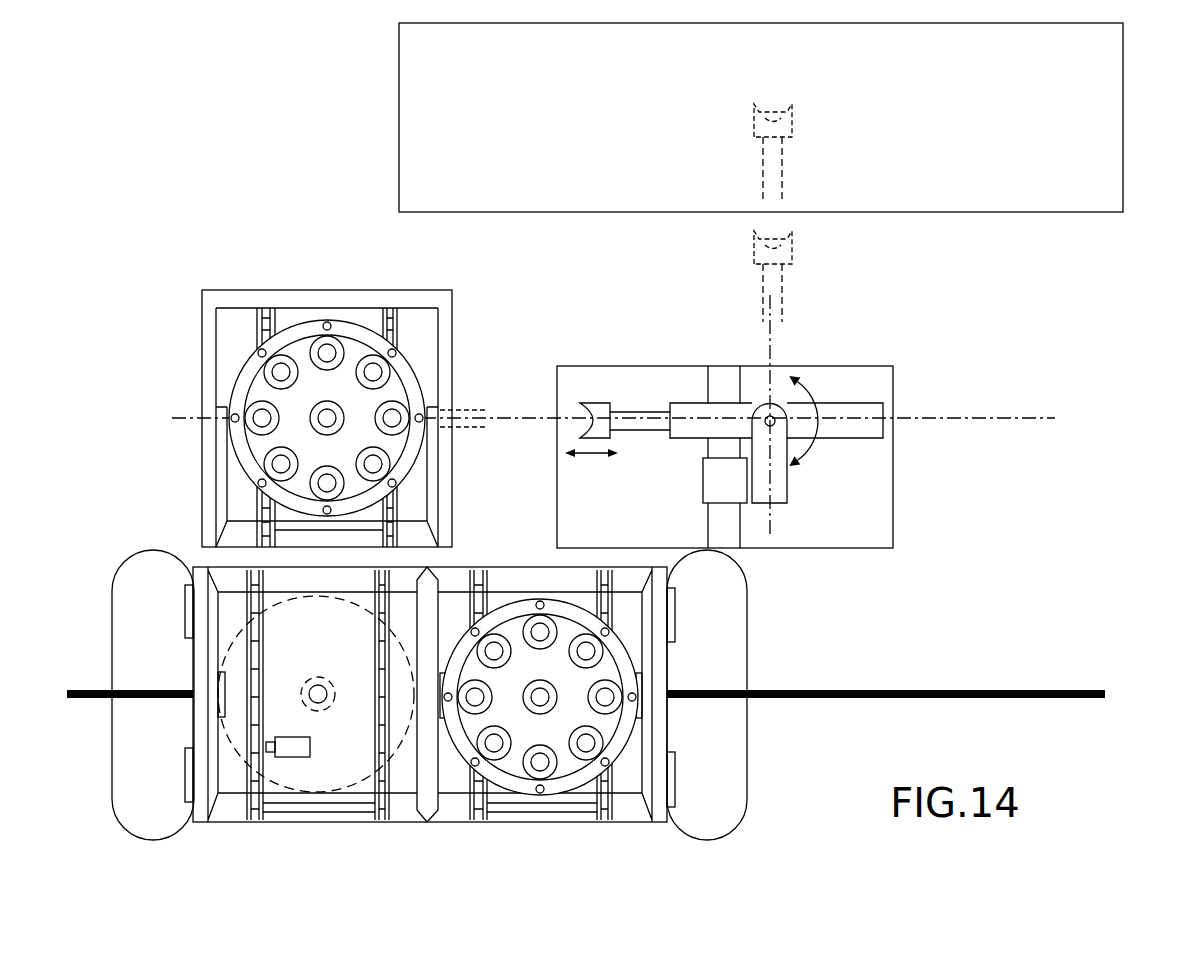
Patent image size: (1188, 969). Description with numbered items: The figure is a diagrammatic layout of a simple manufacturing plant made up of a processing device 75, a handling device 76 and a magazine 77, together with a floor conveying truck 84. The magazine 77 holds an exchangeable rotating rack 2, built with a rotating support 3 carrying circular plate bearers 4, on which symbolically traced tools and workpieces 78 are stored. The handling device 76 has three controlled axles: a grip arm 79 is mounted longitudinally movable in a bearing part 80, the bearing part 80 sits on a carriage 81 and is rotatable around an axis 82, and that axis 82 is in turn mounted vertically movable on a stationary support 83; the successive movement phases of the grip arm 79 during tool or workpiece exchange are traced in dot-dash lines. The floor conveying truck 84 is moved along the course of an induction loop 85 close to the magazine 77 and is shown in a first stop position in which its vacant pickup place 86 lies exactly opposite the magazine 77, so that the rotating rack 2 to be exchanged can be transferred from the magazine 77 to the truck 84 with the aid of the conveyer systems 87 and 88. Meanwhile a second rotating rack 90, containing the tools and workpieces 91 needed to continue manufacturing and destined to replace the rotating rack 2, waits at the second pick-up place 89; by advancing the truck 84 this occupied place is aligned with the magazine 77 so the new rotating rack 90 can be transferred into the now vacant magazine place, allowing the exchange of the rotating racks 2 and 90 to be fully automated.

The rotating rack 2 is at (332, 374).
The rotating support 3 is at (318, 424).
The bearers 4 is at (299, 352).
The processing device 75 is at (960, 153).
The handling device 76 is at (877, 383).
The magazine 77 is at (443, 462).
The tools and workpieces 78 is at (372, 372).
The grip arm 79 is at (637, 412).
The bearing part 80 is at (822, 408).
The carriage 81 is at (778, 477).
The axis 82 is at (772, 416).
The stationary support 83 is at (728, 478).
The floor conveying truck 84 is at (448, 815).
The induction loop 85 is at (853, 692).
The vacant pickup place 86 is at (426, 720).
The conveyer system 87 is at (252, 497).
The conveyer system 88 is at (257, 817).
The second pick-up place 89 is at (556, 720).
The rotating rack 90 is at (549, 733).
The tools and workpieces 91 is at (533, 763).